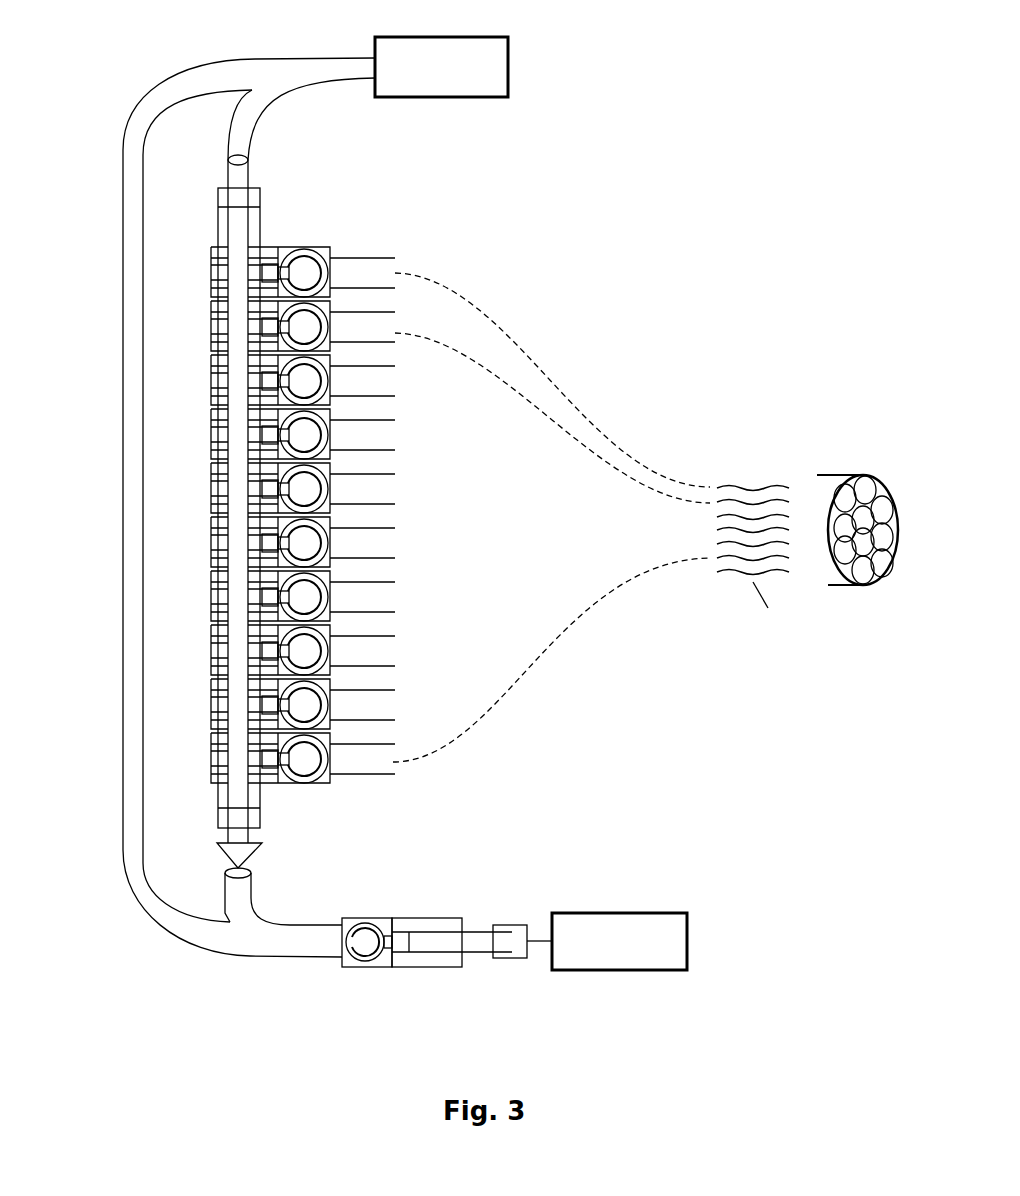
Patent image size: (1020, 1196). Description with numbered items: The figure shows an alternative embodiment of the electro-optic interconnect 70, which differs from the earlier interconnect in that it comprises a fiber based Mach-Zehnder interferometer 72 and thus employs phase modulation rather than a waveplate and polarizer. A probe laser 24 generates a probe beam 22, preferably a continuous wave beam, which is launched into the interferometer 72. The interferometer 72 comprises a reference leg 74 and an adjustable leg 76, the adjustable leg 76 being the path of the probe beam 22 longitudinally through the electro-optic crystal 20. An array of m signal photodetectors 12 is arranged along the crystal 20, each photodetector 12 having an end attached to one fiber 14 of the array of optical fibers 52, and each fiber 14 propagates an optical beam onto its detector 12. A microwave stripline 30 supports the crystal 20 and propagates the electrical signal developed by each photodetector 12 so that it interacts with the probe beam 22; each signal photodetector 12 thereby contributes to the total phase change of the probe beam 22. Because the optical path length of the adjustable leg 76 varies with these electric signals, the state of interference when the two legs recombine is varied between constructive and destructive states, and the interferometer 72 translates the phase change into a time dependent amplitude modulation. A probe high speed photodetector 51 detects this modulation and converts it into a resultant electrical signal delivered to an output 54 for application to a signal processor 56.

The interconnect 70 is at (73, 379).
The probe laser 24 is at (473, 90).
The probe beam 22 is at (250, 173).
The electro-optic crystal 20 is at (218, 228).
The microwave stripline 30 is at (272, 262).
The photodetector 12 is at (320, 247).
The optical fiber 14 is at (562, 450).
The array of optical fibers 52 is at (873, 480).
The Mach-Zehnder interferometer 72 is at (225, 888).
The reference leg 74 is at (145, 788).
The adjustable leg 76 is at (228, 838).
The probe high speed photodetector 51 is at (372, 935).
The output 54 is at (522, 925).
The signal processor 56 is at (658, 912).